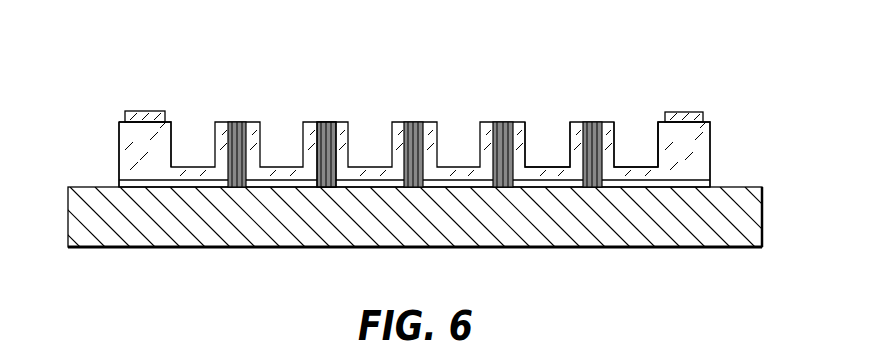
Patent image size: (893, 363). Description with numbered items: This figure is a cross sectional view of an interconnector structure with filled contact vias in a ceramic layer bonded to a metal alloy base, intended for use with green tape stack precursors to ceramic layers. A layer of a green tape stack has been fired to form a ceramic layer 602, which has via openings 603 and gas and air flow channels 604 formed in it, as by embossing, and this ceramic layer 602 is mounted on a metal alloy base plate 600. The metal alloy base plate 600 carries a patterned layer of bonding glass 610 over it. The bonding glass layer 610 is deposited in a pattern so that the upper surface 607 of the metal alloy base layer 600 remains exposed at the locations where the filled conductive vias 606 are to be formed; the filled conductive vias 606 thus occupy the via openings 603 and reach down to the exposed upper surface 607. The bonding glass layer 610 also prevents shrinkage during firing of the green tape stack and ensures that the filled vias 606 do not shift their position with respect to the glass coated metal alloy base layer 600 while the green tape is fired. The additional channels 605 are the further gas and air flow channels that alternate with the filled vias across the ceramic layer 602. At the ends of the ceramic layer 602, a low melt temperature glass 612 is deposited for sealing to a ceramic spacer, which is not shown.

The metal alloy base plate 600 is at (205, 233).
The ceramic layer 602 is at (130, 138).
The via openings 603 is at (322, 137).
The gas and air flow channels 604 is at (199, 147).
The trenches / gaps 605 is at (640, 142).
The filled conductive vias 606 is at (318, 132).
The upper surface of the metal alloy base layer 607 is at (90, 187).
The bonding glass layer 610 is at (682, 182).
The low melt temperature glass 612 is at (147, 111).